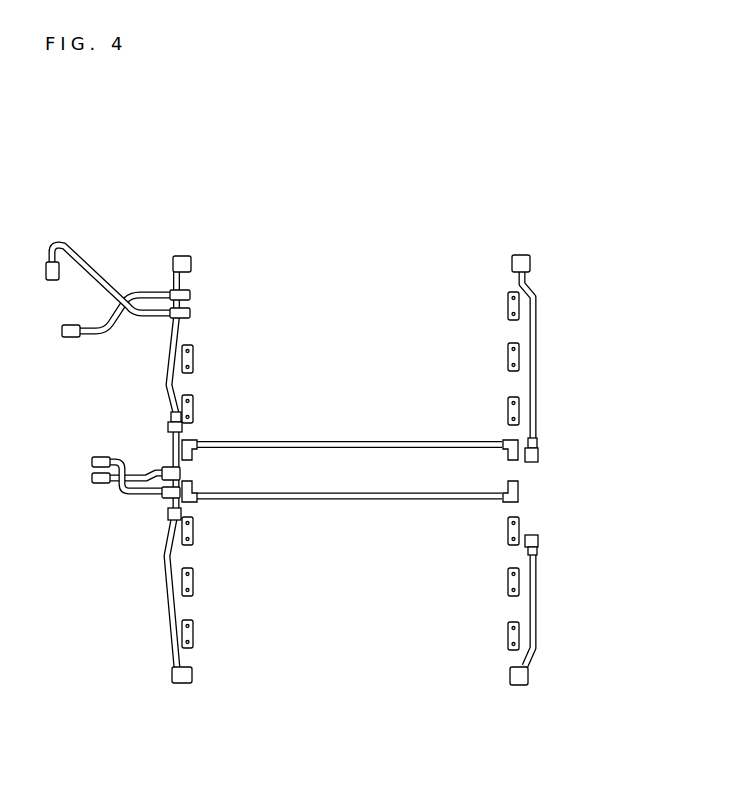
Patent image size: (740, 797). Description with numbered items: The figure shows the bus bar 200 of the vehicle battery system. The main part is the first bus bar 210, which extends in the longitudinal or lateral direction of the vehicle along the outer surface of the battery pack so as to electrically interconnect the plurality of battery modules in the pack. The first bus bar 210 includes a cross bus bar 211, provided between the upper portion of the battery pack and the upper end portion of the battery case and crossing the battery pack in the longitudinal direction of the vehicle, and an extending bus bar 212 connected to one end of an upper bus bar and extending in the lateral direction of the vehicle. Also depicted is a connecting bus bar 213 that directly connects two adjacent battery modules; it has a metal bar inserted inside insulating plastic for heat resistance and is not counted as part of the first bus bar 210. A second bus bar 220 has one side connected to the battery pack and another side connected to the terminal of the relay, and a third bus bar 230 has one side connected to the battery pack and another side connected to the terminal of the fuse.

The bus bar 200 is at (348, 439).
The first bus bar 210 is at (353, 496).
The cross bus bar 211 is at (357, 441).
The extending bus bar 212 is at (158, 377).
The connecting bus bar 213 is at (193, 405).
The second bus bar 220 is at (143, 493).
The third bus bar 230 is at (143, 296).